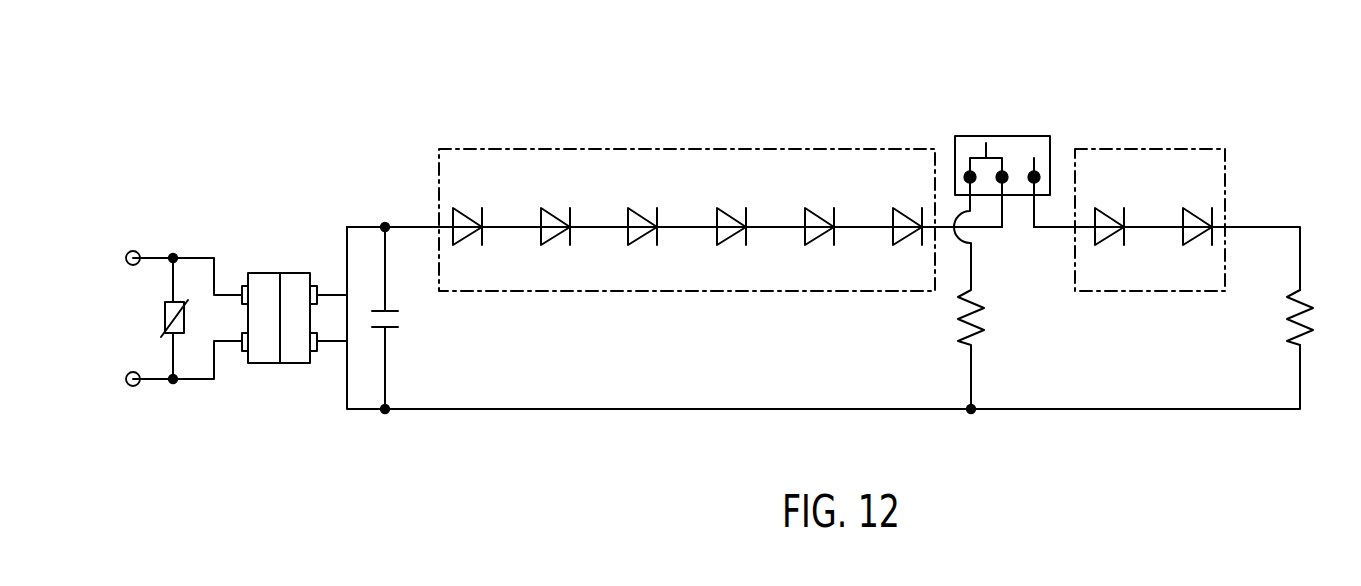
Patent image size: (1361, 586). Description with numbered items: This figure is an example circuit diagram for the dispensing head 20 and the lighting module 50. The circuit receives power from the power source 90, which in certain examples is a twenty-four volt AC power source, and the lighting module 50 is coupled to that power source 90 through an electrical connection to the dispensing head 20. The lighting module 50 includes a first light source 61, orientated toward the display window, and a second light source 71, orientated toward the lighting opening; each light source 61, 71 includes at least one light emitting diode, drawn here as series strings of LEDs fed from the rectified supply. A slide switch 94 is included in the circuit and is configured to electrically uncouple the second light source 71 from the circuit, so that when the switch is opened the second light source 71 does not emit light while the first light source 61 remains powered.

The dispensing head 20 is at (353, 121).
The lighting module 50 is at (767, 120).
The first light source 61 is at (466, 241).
The second light source 71 is at (1200, 240).
The power source 90 is at (221, 461).
The slide switch 94 is at (1004, 136).